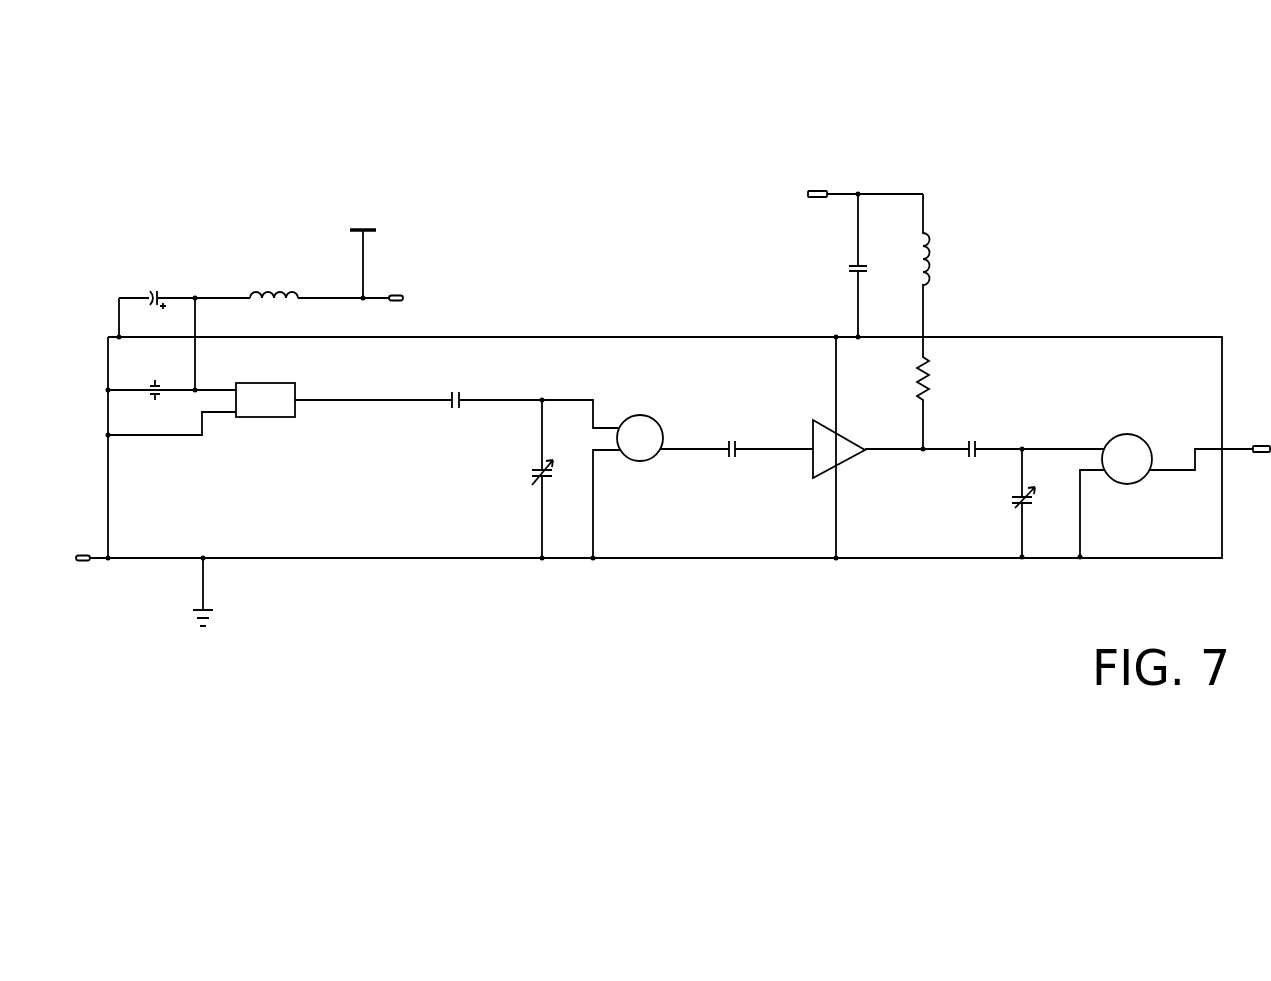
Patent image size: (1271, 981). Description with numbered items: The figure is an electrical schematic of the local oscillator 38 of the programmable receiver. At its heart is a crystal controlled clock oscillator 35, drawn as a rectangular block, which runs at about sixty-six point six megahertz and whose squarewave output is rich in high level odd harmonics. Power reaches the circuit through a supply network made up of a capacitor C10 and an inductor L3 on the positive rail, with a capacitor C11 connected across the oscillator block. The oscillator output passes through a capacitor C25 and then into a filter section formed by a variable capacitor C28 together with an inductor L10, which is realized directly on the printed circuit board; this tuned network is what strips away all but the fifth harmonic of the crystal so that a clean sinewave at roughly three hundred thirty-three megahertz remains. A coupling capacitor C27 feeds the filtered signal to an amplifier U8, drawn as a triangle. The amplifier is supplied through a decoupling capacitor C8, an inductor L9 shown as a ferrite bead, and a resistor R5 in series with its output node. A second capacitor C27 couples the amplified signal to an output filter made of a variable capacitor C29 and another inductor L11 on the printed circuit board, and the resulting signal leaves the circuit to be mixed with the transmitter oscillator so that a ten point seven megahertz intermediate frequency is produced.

The local oscillator 38 is at (140, 222).
The crystal controlled clock oscillator 35 is at (283, 383).
The capacitor C10 4.7uF C10 is at (161, 288).
The inductor L3 1uH L3 is at (273, 294).
The capacitor C11 .001 C11 is at (150, 390).
The capacitor C25 3.3pF C25 is at (454, 400).
The variable capacitor C28 12pF C28 is at (510, 481).
The inductor L10 on PCB L10 is at (647, 440).
The capacitor C27 is at (730, 434).
The amplifier U8 MSA-0686 U8 is at (778, 469).
The variable capacitor C29 12pF C29 is at (994, 516).
The inductor L11 on PCB L11 is at (1137, 463).
The capacitor C8 .1uF C8 is at (828, 269).
The inductor L9 ferrite bead L9 is at (1010, 265).
The resistor R5 100 R5 is at (945, 393).